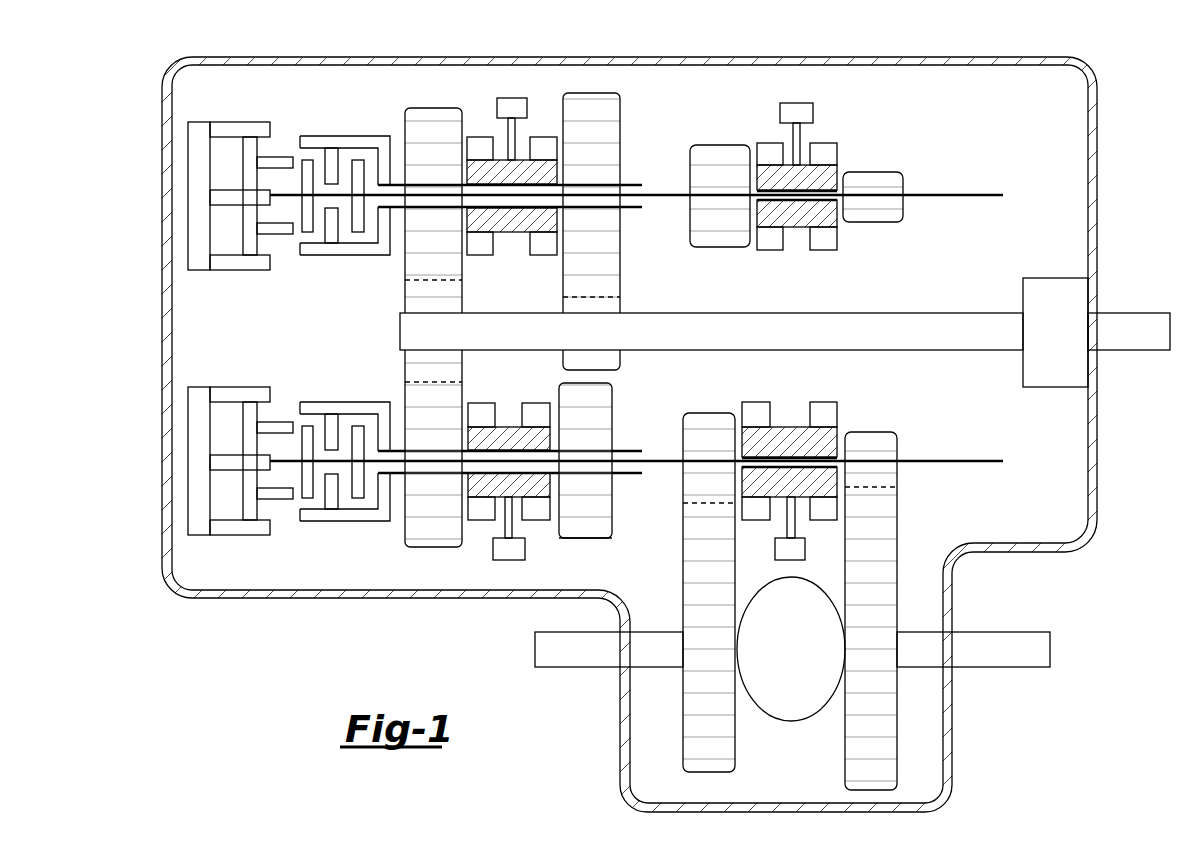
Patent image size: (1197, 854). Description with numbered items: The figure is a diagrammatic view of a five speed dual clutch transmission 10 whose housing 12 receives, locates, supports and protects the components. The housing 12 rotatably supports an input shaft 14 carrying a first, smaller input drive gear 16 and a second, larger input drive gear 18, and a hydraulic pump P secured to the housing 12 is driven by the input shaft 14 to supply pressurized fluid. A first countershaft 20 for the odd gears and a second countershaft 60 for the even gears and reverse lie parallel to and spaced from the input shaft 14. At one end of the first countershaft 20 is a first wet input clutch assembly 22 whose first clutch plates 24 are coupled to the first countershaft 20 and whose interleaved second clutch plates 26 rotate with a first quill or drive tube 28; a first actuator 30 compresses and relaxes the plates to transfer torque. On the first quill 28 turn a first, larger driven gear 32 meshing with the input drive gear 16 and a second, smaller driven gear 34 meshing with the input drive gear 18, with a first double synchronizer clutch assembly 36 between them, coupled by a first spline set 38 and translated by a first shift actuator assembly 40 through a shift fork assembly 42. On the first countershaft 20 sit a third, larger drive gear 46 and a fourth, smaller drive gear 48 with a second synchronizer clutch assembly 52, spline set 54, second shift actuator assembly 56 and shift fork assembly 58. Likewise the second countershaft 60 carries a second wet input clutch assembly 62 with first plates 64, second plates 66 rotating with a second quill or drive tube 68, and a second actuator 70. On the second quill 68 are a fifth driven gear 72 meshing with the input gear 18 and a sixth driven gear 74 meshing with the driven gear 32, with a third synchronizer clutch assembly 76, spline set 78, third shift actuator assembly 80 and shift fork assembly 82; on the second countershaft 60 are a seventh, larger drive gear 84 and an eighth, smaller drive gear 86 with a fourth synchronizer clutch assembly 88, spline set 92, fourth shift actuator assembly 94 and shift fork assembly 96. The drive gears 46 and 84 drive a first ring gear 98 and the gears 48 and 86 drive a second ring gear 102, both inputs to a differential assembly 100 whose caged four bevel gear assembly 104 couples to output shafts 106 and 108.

The five speed dual clutch transmission 10 is at (1110, 146).
The housing 12 is at (312, 600).
The input shaft 14 is at (1131, 313).
The first, smaller input drive gear 16 is at (620, 352).
The second, larger input drive gear 18 is at (410, 303).
The first layshaft or countershaft 20 is at (948, 193).
The first wet input clutch assembly 22 is at (341, 161).
The first plurality of clutch plates or discs 24 is at (307, 158).
The second plurality of clutch plates or discs 26 is at (336, 232).
The first quill or drive tube 28 is at (626, 185).
The first actuator 30 is at (236, 113).
The first, larger driven gear 32 is at (592, 93).
The second, smaller driven gear 34 is at (425, 108).
The first double synchronizer clutch assembly 36 is at (512, 224).
The first interengaging male and female spline set 38 is at (508, 210).
The first shift actuator assembly 40 is at (484, 96).
The output member and shift fork assembly 42 is at (507, 128).
The third, larger drive gear 46 is at (718, 145).
The fourth, smaller drive gear 48 is at (872, 172).
The second double synchronizer clutch assembly 52 is at (765, 215).
The second interengaging male and female spline set 54 is at (793, 208).
The second shift actuator assembly 56 is at (769, 100).
The output member and shift fork assembly 58 is at (790, 128).
The second layshaft or countershaft 60 is at (948, 458).
The second wet input clutch assembly 62 is at (439, 463).
The first plurality of clutch plates or discs 64 is at (307, 425).
The second plurality of clutch plates or discs 66 is at (336, 493).
The second quill or drive tube 68 is at (613, 445).
The second actuator 70 is at (236, 378).
The fifth driven gear 72 is at (430, 550).
The sixth driven gear 74 is at (597, 540).
The third double synchronizer clutch assembly 76 is at (509, 436).
The third interengaging male and female spline set 78 is at (505, 440).
The third shift actuator assembly 80 is at (516, 562).
The output member and shift fork assembly 82 is at (515, 532).
The seventh, larger drive gear 84 is at (710, 413).
The eighth, smaller drive gear 86 is at (872, 432).
The fourth double synchronizer clutch assembly 88 is at (818, 439).
The fourth interengaging male and female spline set 92 is at (787, 450).
The fourth shift actuator assembly 94 is at (856, 552).
The output member and shift fork assembly 96 is at (795, 533).
The first output or ring gear 98 is at (683, 748).
The differential assembly 100 is at (766, 745).
The second output or ring gear 102 is at (900, 758).
The caged, four bevel gear assembly 104 is at (794, 710).
The axle or output shaft 106 is at (547, 668).
The axle or output shaft 108 is at (1028, 668).
The hydraulic pump P is at (1078, 377).